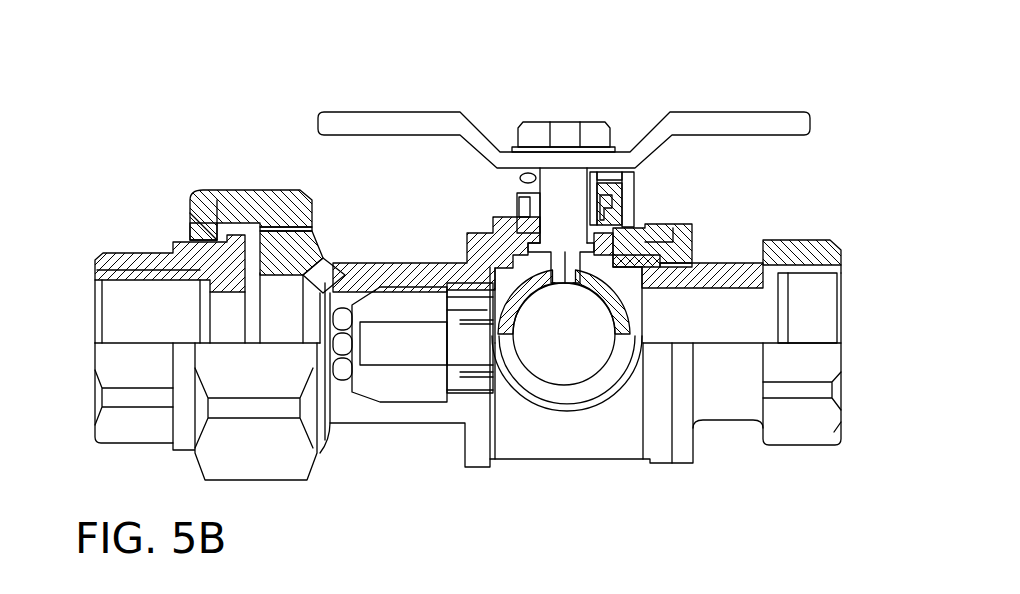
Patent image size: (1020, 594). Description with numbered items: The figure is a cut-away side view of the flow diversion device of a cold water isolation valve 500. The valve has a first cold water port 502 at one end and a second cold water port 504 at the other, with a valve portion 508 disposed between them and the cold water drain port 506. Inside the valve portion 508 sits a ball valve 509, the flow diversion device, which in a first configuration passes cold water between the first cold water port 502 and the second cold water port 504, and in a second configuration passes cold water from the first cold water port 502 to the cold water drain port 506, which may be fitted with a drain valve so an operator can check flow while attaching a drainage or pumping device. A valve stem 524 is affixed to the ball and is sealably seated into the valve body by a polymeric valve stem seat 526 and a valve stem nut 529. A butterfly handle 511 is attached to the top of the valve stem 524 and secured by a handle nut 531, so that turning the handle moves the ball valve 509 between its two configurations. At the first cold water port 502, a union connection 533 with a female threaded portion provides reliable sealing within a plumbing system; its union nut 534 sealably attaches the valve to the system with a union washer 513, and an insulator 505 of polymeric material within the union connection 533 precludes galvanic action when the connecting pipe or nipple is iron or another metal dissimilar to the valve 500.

The cold water isolation valve 500 is at (846, 172).
The first cold water port 502 is at (94, 344).
The second cold water port 504 is at (843, 325).
The insulator 505 is at (210, 194).
The cold water drain port 506 is at (590, 386).
The valve portion 508 is at (466, 234).
The ball valve 509 is at (637, 226).
The butterfly handle 511 is at (745, 110).
The union washer 513 is at (192, 222).
The valve stem 524 is at (553, 180).
The polymeric valve stem seat 526 is at (519, 208).
The valve stem nut 529 is at (519, 178).
The handle nut 531 is at (567, 135).
The union connection 533 is at (122, 253).
The union nut 534 is at (258, 190).